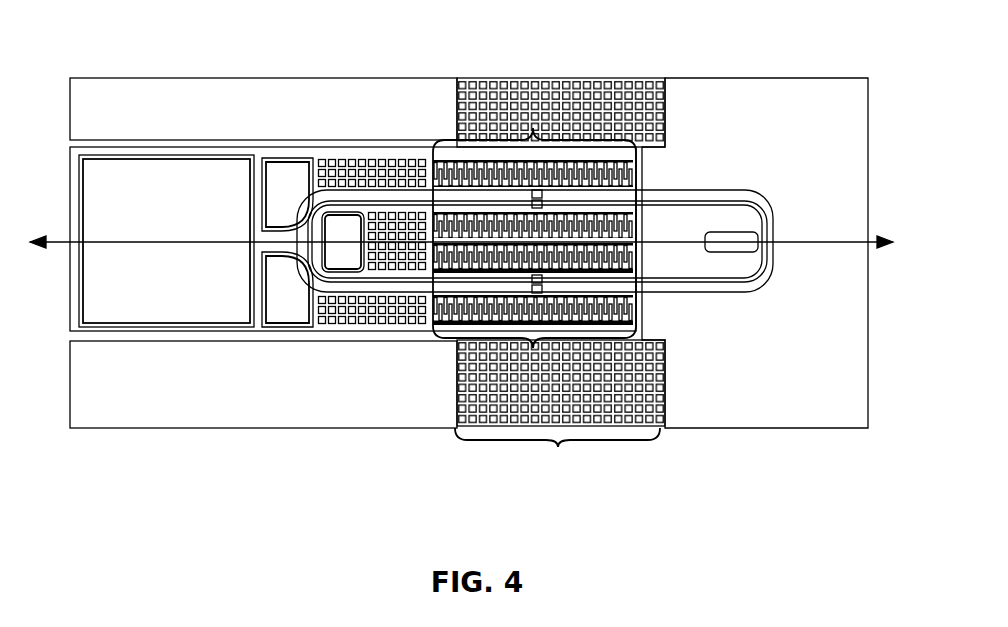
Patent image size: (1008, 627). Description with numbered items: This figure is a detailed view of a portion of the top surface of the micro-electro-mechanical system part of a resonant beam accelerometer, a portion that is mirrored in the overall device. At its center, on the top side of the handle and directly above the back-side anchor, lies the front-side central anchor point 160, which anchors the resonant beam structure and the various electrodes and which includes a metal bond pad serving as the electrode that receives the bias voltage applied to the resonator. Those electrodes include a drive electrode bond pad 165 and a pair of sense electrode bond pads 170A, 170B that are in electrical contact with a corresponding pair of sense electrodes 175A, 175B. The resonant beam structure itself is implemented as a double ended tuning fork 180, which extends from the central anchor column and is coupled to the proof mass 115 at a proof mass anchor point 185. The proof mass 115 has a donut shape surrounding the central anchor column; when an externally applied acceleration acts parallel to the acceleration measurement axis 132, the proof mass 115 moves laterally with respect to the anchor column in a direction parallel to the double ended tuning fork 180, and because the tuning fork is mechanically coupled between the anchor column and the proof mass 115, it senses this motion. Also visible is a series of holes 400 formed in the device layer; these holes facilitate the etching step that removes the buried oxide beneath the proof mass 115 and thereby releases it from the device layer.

The proof mass 115 is at (796, 397).
The acceleration measurement axis 132 is at (135, 243).
The front-side central anchor point 160 is at (140, 292).
The sense electrode bond pad 170A is at (278, 195).
The sense electrode bond pad 170B is at (286, 300).
The sense electrode 175A is at (533, 128).
The sense electrode 175B is at (533, 343).
The double ended tuning fork 180 is at (711, 197).
The drive electrode bond pad 165 is at (354, 259).
The proof mass anchor point 185 is at (668, 262).
The holes 400 is at (558, 447).